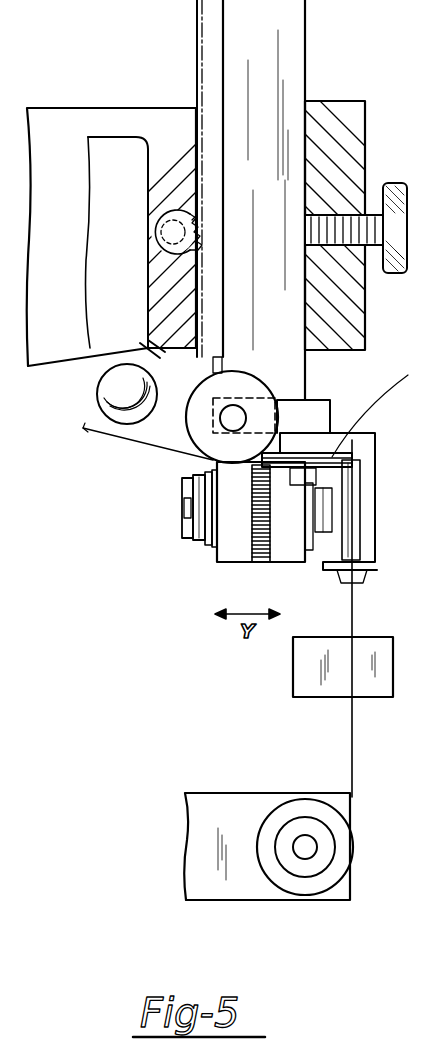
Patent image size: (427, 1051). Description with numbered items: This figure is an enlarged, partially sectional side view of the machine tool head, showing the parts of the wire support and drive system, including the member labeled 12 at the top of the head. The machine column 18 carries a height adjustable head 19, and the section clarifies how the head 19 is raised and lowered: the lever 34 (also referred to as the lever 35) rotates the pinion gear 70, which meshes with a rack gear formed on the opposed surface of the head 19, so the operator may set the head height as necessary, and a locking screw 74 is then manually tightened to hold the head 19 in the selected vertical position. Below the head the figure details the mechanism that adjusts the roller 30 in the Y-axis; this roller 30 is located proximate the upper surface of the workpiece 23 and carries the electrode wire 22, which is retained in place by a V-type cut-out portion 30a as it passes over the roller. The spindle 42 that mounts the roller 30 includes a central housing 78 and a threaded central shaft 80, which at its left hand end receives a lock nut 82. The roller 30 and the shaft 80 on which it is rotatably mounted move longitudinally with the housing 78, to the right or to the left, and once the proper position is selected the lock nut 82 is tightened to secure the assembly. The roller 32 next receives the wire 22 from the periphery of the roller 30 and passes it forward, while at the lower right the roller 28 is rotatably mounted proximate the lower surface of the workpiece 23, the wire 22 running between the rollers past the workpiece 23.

The guide strip / centerline member 12 is at (200, 40).
The machine column 18 is at (58, 108).
The height adjustable head 19 is at (300, 46).
The electrode wire 22 is at (125, 440).
The workpiece 23 is at (294, 668).
The roller 28 is at (340, 800).
The roller 30 is at (370, 489).
The V-type cut-out portion 30a is at (350, 462).
The roller 32 is at (322, 414).
The lever 34 is at (273, 397).
The lever 35 is at (97, 396).
The spindle assembly 42 is at (230, 562).
The pinion gear 70 is at (160, 214).
The locking screw 74 is at (372, 212).
The central housing 78 is at (276, 562).
The central shaft 80 is at (182, 510).
The lock nut 82 is at (190, 540).